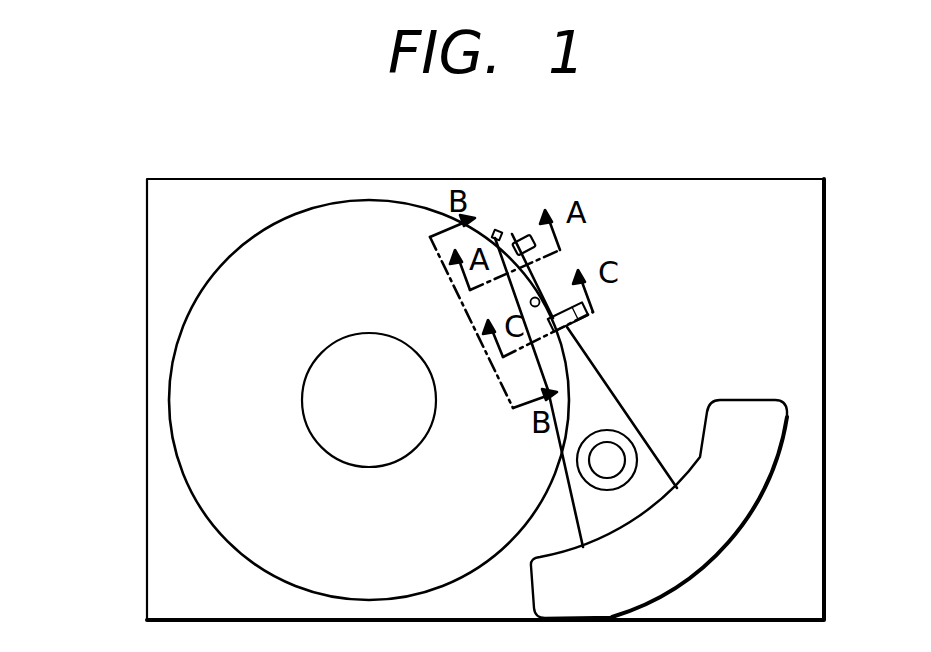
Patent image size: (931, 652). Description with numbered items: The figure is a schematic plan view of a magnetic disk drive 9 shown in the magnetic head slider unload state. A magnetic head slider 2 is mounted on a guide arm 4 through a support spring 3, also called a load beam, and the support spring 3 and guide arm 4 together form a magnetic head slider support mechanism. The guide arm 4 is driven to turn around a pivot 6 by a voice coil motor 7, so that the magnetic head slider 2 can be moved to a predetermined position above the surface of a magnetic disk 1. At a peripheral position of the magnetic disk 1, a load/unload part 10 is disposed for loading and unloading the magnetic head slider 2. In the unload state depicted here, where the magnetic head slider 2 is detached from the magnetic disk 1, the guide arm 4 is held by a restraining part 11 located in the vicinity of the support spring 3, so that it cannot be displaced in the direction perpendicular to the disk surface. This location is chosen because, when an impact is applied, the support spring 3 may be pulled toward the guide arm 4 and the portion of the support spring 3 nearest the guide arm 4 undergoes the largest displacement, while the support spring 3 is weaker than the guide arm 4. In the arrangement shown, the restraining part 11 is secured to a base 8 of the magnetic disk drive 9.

The magnetic disk 1 is at (192, 343).
The magnetic head slider 2 is at (500, 238).
The support spring 3 is at (543, 264).
The guide arm 4 is at (590, 380).
The pivot 6 is at (610, 443).
The voice coil motor 7 is at (756, 412).
The base 8 is at (772, 190).
The magnetic disk drive 9 is at (123, 220).
The load/unload part 10 is at (520, 233).
The restraining part 11 is at (588, 303).